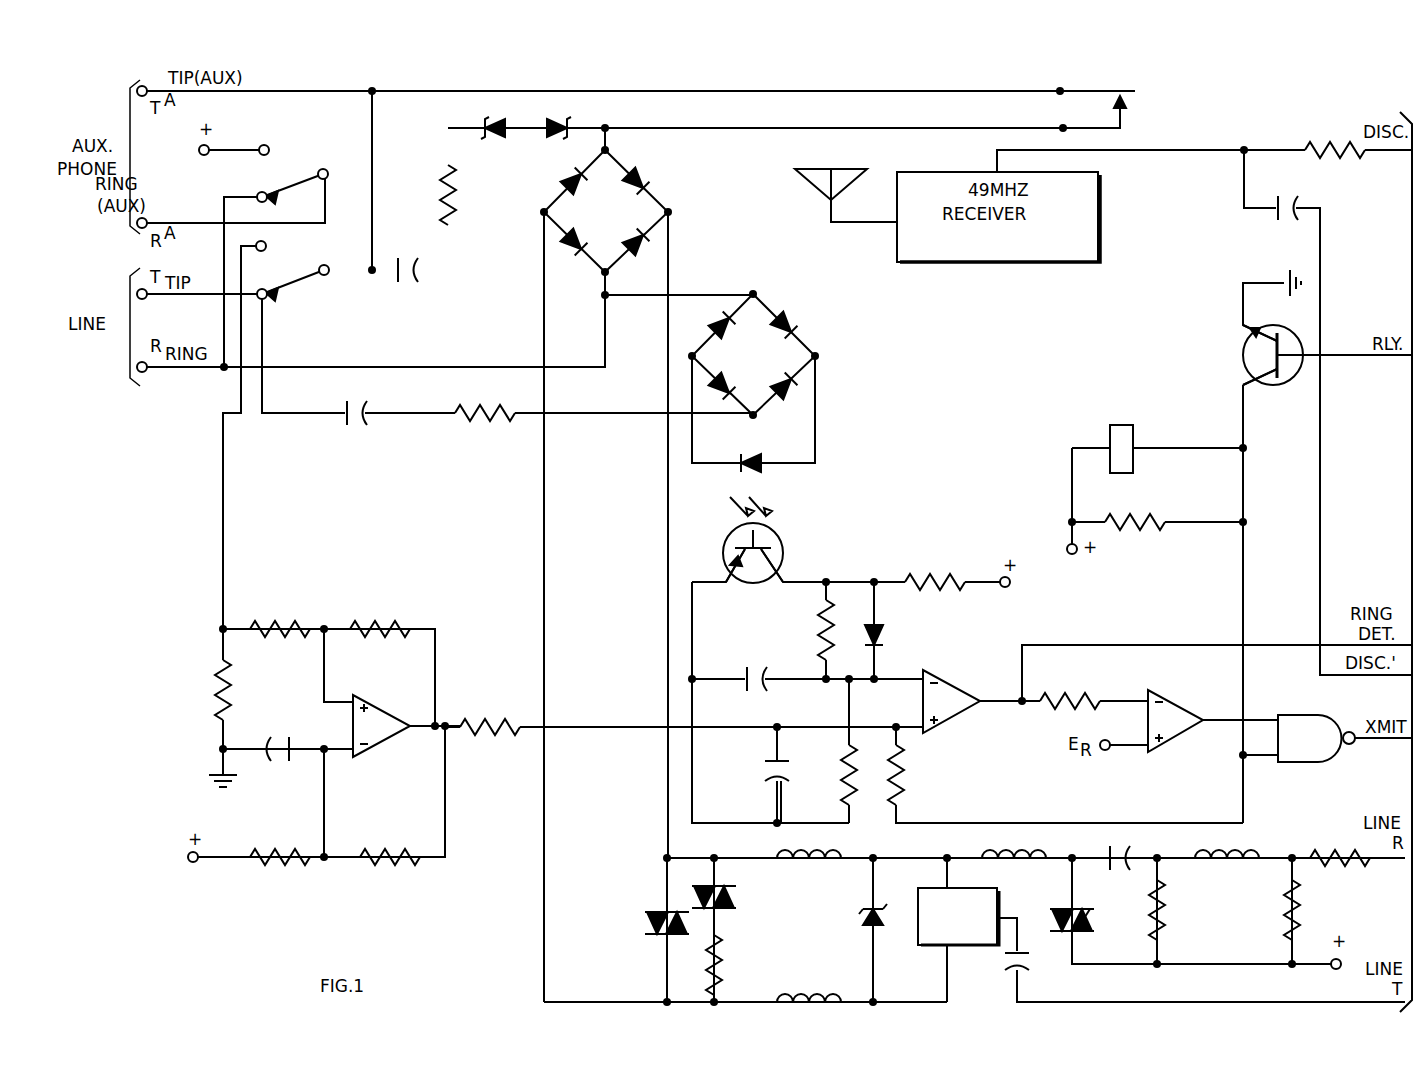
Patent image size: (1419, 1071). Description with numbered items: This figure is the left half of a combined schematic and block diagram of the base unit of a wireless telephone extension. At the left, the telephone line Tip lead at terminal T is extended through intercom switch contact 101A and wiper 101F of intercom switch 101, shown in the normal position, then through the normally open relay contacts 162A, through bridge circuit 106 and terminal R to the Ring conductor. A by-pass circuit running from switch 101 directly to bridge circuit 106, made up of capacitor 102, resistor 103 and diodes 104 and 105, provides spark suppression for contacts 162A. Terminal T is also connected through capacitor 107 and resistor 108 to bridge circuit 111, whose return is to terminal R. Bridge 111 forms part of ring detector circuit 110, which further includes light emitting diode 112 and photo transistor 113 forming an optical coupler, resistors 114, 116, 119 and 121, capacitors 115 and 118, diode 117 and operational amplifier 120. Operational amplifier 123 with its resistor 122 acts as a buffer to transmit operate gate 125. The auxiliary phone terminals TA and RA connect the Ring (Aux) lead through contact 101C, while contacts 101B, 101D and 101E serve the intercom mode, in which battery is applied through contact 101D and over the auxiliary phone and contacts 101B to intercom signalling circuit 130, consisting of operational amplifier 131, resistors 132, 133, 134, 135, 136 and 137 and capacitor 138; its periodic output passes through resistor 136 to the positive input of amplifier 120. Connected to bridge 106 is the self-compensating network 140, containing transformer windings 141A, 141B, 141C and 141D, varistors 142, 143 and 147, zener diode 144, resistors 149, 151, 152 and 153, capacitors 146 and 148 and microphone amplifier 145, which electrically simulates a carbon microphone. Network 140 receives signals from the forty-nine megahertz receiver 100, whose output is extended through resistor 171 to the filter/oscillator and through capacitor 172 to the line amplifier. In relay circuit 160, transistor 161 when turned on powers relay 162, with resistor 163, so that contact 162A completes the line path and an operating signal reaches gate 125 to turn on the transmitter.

The 49 MHz receiver 100 is at (1018, 249).
The intercom switch 101 is at (322, 346).
The intercom switch contact 101A is at (270, 300).
The intercom switch contacts 101B is at (266, 241).
The intercom switch contact 101C is at (262, 194).
The intercom switch contact 101D is at (250, 144).
The intercom switch contact 101E is at (306, 171).
The intercom switch wiper 101F is at (306, 270).
The capacitor 102 is at (422, 281).
The resistor 103 is at (442, 182).
The diode 104 is at (482, 116).
The diode 105 is at (573, 116).
The bridge circuit 106 is at (622, 222).
The capacitor 107 is at (368, 406).
The resistor 108 is at (476, 406).
The ring detector circuit 110 is at (950, 638).
The bridge circuit 111 is at (765, 363).
The light emitting diode 112 is at (745, 454).
The photo transistor 113 is at (778, 538).
The resistor 114 is at (907, 568).
The capacitor 115 is at (745, 656).
The resistor 116 is at (818, 618).
The diode 117 is at (882, 618).
The capacitor 118 is at (766, 766).
The resistor 119 is at (846, 771).
The operational amplifier 120 is at (954, 686).
The resistor 121 is at (903, 760).
The resistor 122 is at (1065, 688).
The operational amplifier 123 is at (1177, 704).
The transmit operate gate 125 is at (1302, 718).
The intercom signalling circuit 130 is at (285, 707).
The operational amplifier 131 is at (372, 697).
The resistor 132 is at (267, 621).
The resistor 133 is at (376, 621).
The resistor 134 is at (267, 847).
The resistor 135 is at (380, 847).
The resistor 136 is at (480, 716).
The resistor 137 is at (210, 668).
The capacitor 138 is at (288, 741).
The self-compensating network 140 is at (796, 942).
The transformer winding 141A is at (780, 848).
The transformer winding 141B is at (984, 848).
The transformer winding 141C is at (1202, 848).
The transformer winding 141D is at (798, 986).
The varistor 142 is at (642, 921).
The varistor 143 is at (740, 896).
The zener diode 144 is at (852, 912).
The microphone amplifier 145 is at (1000, 892).
The capacitor 146 is at (1030, 966).
The varistor 147 is at (1087, 910).
The capacitor 148 is at (1106, 848).
The resistor 149 is at (1165, 896).
The resistor 151 is at (1295, 896).
The resistor 152 is at (1328, 848).
The resistor 153 is at (722, 960).
The relay circuit 160 is at (1162, 388).
The transistor 161 is at (1238, 358).
The relay 162 is at (1130, 422).
The relay contacts 162A is at (1128, 100).
The resistor 163 is at (1140, 511).
The resistor 171 is at (1320, 140).
The capacitor 172 is at (1295, 196).